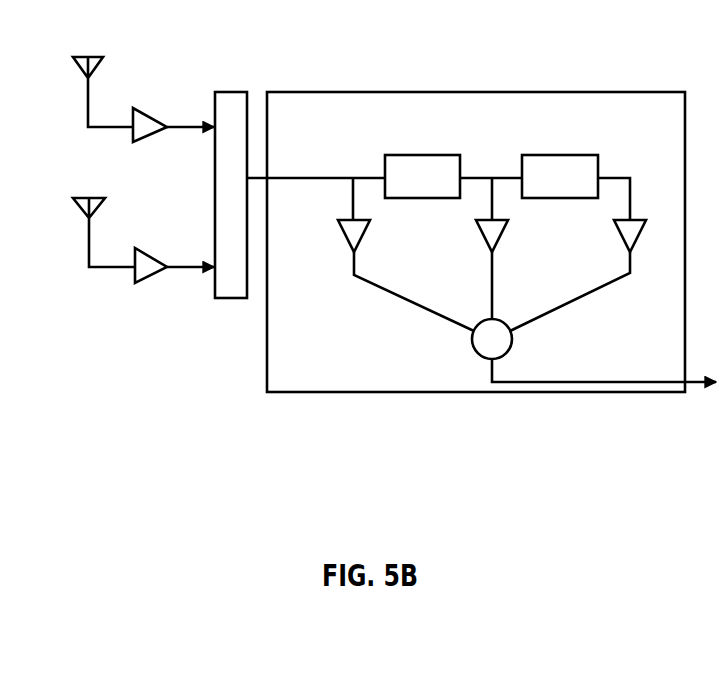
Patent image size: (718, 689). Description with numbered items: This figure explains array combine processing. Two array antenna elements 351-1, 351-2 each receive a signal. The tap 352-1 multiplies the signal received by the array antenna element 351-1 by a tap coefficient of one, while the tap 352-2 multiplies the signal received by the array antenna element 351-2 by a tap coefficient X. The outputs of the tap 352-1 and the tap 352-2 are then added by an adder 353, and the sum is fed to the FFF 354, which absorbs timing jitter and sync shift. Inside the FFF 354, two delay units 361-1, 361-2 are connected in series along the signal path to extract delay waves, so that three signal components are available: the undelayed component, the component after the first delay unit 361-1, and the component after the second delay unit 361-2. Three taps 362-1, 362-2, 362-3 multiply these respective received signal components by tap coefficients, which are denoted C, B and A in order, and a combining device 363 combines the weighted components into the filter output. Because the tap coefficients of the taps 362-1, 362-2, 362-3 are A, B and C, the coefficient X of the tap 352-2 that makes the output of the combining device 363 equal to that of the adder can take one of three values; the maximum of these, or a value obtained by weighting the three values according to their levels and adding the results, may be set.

The array antenna element 351-1 is at (78, 57).
The array antenna element 351-2 is at (79, 198).
The tap 352-1 is at (187, 78).
The tap 352-2 is at (190, 218).
The adder 353 is at (232, 92).
The FFF 354 is at (397, 92).
The delay unit 361-1 is at (457, 138).
The delay unit 361-2 is at (595, 138).
The tap 362-1 is at (345, 236).
The tap 362-2 is at (484, 236).
The tap 362-3 is at (621, 236).
The combining device 363 is at (512, 338).